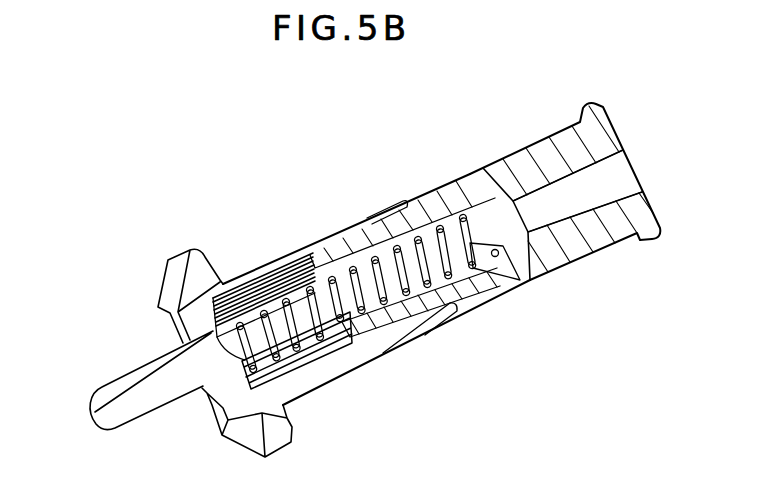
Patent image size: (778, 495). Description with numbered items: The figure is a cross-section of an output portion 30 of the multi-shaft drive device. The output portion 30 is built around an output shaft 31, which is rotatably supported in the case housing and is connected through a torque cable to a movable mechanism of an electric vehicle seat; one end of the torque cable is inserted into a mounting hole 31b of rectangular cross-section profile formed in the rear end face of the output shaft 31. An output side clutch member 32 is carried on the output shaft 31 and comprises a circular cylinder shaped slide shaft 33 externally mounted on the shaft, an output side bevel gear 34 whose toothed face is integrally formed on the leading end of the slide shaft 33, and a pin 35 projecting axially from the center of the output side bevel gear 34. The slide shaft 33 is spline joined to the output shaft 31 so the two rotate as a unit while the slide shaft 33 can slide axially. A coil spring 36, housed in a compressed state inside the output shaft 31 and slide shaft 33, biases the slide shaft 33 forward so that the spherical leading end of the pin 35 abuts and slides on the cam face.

The output portion 30 is at (253, 229).
The output shaft 31 is at (517, 152).
The mounting hole 31b is at (618, 172).
The output side clutch member 32 is at (313, 245).
The slide shaft 33 is at (342, 374).
The output side bevel gear 34 is at (163, 286).
The pin 35 is at (93, 405).
The coil spring 36 is at (364, 278).